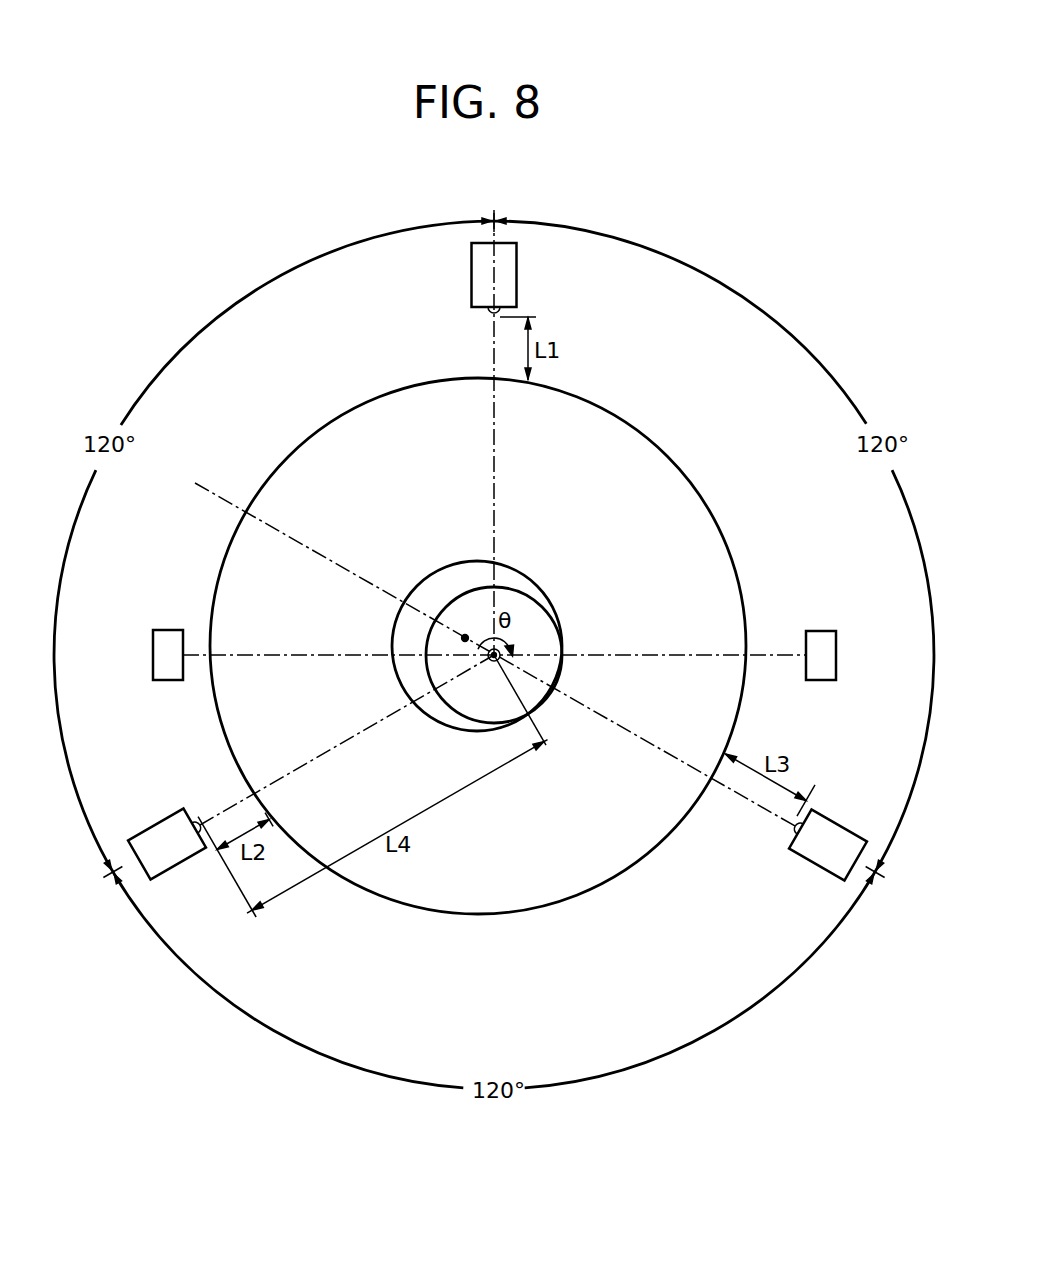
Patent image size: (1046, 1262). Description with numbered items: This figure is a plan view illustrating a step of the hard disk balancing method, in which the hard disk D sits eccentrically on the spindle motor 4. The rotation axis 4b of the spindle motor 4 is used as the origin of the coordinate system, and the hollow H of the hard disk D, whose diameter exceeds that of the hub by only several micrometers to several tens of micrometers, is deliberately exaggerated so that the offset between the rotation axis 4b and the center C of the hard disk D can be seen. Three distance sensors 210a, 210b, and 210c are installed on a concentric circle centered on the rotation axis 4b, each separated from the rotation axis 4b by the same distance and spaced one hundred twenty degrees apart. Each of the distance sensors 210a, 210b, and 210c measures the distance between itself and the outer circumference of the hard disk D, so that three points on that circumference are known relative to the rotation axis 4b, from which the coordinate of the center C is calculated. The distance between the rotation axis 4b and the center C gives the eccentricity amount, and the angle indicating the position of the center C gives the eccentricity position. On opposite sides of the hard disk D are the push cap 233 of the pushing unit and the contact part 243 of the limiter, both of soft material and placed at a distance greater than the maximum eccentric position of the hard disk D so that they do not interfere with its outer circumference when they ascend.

The distance sensor 210a is at (517, 273).
The distance sensor 210b is at (149, 823).
The distance sensor 210c is at (842, 821).
The push cap 233 is at (168, 629).
The contact part 243 is at (821, 630).
The spindle motor 4 is at (443, 710).
The rotation axis 4b is at (493, 660).
The hard disk D is at (660, 452).
The hollow H is at (418, 586).
The center C is at (465, 636).